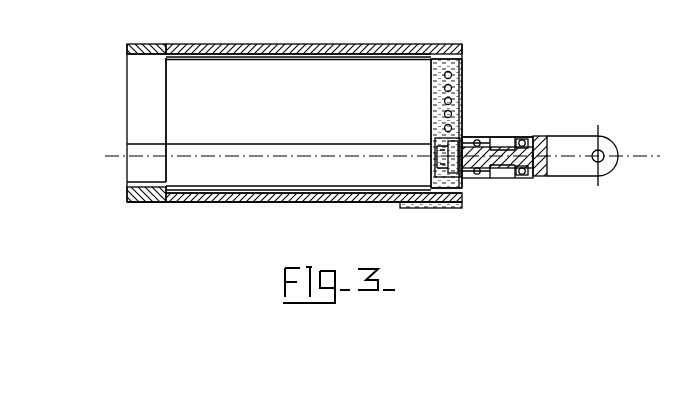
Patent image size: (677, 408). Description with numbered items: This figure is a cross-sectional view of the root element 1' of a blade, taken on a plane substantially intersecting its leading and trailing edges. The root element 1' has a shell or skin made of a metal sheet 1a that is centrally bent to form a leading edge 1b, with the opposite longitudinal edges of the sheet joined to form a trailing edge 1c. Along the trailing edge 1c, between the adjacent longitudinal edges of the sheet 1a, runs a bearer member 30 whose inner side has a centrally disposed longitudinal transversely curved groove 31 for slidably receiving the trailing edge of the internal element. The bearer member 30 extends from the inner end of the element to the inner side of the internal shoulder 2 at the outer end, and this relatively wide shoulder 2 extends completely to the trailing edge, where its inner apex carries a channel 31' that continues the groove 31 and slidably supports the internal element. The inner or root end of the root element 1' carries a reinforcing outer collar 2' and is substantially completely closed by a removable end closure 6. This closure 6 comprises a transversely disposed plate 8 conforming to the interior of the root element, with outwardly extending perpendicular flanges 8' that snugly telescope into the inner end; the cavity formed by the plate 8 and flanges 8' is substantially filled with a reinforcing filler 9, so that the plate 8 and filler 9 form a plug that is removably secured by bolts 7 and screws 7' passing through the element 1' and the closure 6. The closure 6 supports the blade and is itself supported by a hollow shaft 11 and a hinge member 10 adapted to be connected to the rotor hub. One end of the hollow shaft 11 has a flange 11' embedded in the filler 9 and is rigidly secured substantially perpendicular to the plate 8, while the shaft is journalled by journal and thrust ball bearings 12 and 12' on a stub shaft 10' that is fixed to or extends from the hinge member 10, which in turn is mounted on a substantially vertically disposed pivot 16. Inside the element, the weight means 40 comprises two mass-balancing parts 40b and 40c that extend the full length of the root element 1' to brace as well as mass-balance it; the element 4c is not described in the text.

The root element 1' is at (254, 123).
The metal sheet 1a is at (328, 80).
The leading edge 1b is at (193, 199).
The trailing edge 1c is at (275, 43).
The internal shoulder 2 is at (152, 34).
The reinforcing outer collar 2' is at (431, 218).
The end wall element 4c is at (137, 203).
The removable end closure 6 is at (471, 86).
The bolts 7 is at (462, 123).
The screws 7' is at (424, 160).
The plate 8 is at (475, 121).
The flanges 8' is at (465, 40).
The reinforcing filler 9 is at (460, 96).
The hinge member 10 is at (582, 170).
The stub shaft 10' is at (528, 179).
The hollow shaft 11 is at (503, 139).
The flange 11' is at (458, 118).
The journal ball bearings 12 is at (487, 184).
The thrust ball bearings 12' is at (543, 187).
The pivot 16 is at (604, 153).
The bearer member 30 is at (390, 50).
The groove 31 is at (298, 73).
The channel 31' is at (125, 68).
The weight means 40 is at (325, 187).
The mass-balancing part 40b is at (303, 199).
The mass-balancing part 40c is at (247, 198).